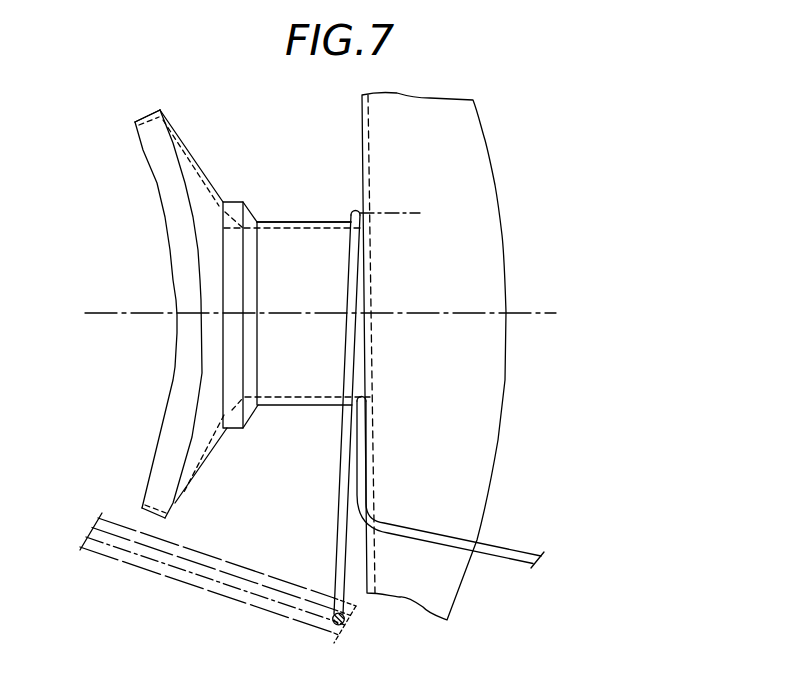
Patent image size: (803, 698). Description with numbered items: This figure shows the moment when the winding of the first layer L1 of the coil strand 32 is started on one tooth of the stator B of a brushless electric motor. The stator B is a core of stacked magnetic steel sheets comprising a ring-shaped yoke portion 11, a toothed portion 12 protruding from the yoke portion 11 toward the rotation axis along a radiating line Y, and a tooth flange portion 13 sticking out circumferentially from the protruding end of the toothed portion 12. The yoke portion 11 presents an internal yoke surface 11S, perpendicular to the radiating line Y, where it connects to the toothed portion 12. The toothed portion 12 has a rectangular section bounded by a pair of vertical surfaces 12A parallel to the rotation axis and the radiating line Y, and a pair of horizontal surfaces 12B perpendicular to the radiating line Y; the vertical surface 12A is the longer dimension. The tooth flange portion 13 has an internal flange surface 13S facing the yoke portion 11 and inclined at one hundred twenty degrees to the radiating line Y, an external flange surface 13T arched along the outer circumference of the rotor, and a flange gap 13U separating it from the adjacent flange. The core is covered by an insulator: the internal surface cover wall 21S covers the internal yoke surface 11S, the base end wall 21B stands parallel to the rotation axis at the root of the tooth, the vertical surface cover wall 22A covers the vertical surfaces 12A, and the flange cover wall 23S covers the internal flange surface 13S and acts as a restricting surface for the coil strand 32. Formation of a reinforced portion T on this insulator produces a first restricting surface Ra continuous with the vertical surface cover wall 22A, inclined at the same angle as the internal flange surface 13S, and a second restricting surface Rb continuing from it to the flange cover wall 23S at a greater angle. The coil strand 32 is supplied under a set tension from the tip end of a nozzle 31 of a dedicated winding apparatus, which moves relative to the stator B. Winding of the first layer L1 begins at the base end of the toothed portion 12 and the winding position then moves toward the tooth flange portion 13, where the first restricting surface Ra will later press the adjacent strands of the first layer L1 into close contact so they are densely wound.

The yoke portion 11 is at (477, 235).
The internal yoke surface 11S is at (362, 160).
The toothed portion 12 is at (265, 222).
The vertical surface 12A is at (365, 178).
The horizontal surface 12B is at (273, 279).
The tooth flange portion 13 is at (167, 418).
The internal flange surface 13S is at (198, 458).
The external flange surface 13T is at (171, 251).
The flange gap 13U is at (120, 112).
The base end wall 21B is at (367, 352).
The internal surface cover wall 21S is at (372, 555).
The vertical surface cover wall 22A is at (280, 222).
The flange cover wall 23S is at (187, 140).
The nozzle 31 is at (170, 575).
The coil strand 32 is at (344, 621).
The stator B is at (577, 200).
The first layer L1 is at (403, 215).
The first restricting surface Ra is at (257, 360).
The second restricting surface Rb is at (233, 430).
The reinforced portion T is at (234, 199).
The radiating line Y is at (330, 313).